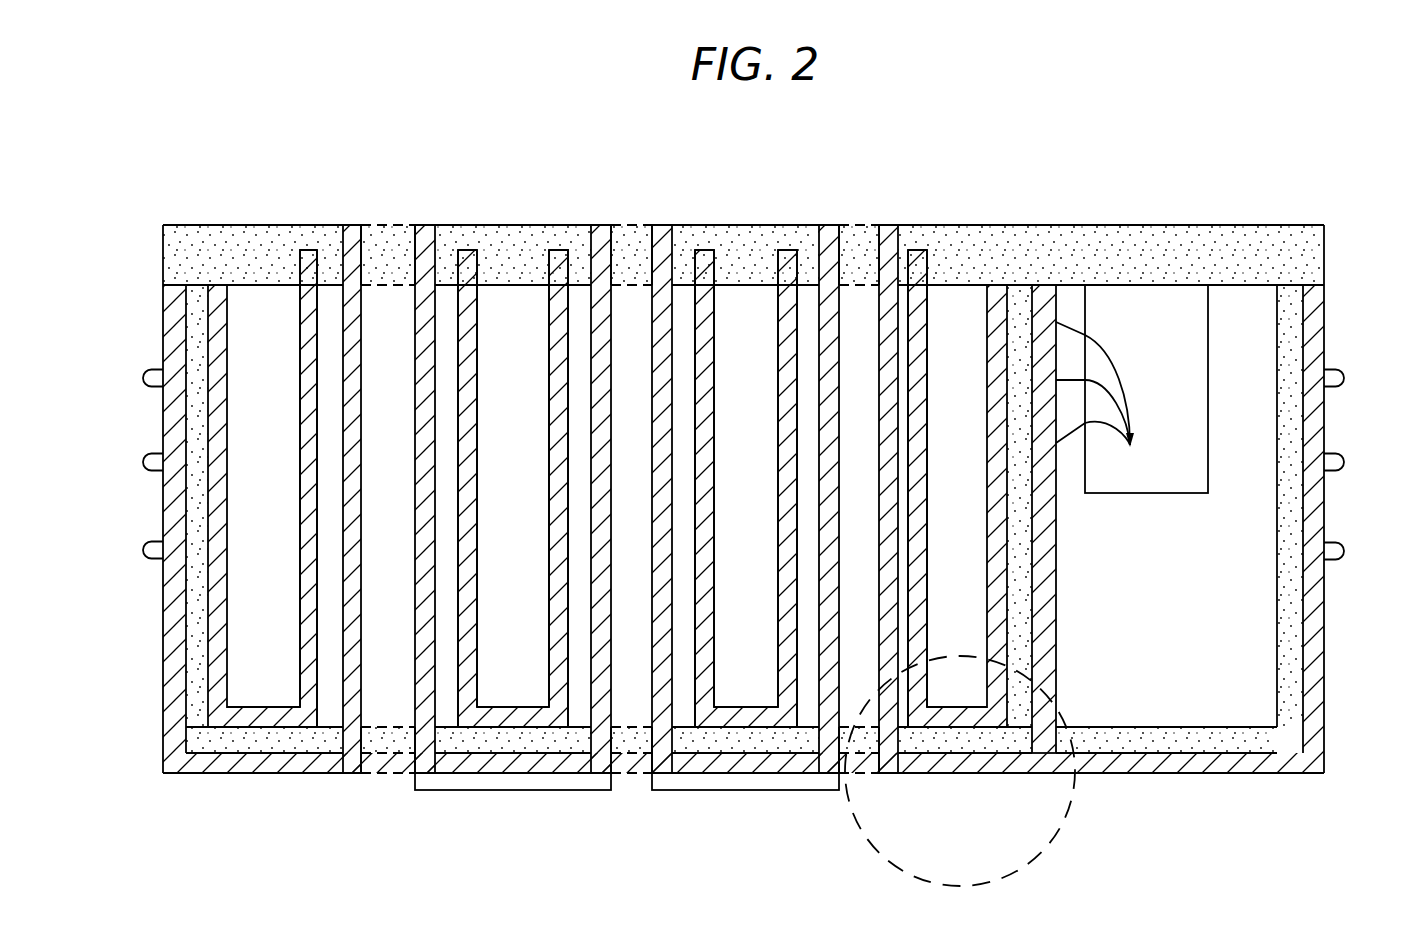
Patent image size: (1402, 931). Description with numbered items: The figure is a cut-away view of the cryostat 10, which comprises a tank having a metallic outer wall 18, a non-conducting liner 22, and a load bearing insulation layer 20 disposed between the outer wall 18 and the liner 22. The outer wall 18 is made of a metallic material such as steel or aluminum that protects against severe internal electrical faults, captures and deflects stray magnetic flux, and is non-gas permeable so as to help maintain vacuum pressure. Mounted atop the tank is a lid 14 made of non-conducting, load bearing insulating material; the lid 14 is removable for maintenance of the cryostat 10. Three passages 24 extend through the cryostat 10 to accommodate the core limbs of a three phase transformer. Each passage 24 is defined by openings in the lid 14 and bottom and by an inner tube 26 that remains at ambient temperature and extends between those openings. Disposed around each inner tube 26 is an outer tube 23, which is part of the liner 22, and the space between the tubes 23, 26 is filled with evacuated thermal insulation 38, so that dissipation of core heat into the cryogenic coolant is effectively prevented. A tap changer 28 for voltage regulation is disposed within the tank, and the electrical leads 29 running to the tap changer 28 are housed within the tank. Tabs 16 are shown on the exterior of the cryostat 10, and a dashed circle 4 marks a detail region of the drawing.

The cryostat 10 is at (192, 152).
The lid 14 is at (1003, 226).
The terminal tabs 16 is at (143, 551).
The outer wall 18 is at (1100, 775).
The load bearing insulation layer 20 is at (166, 612).
The non-conducting liner 22 is at (240, 707).
The outer tubes 23 is at (300, 400).
The passages 24 is at (367, 527).
The inner tubes 26 is at (421, 233).
The tap changer 28 is at (1165, 324).
The electrical leads 29 is at (1095, 399).
The evacuated thermal insulation 38 is at (328, 495).
The detail region of FIG. 4 is at (1020, 868).